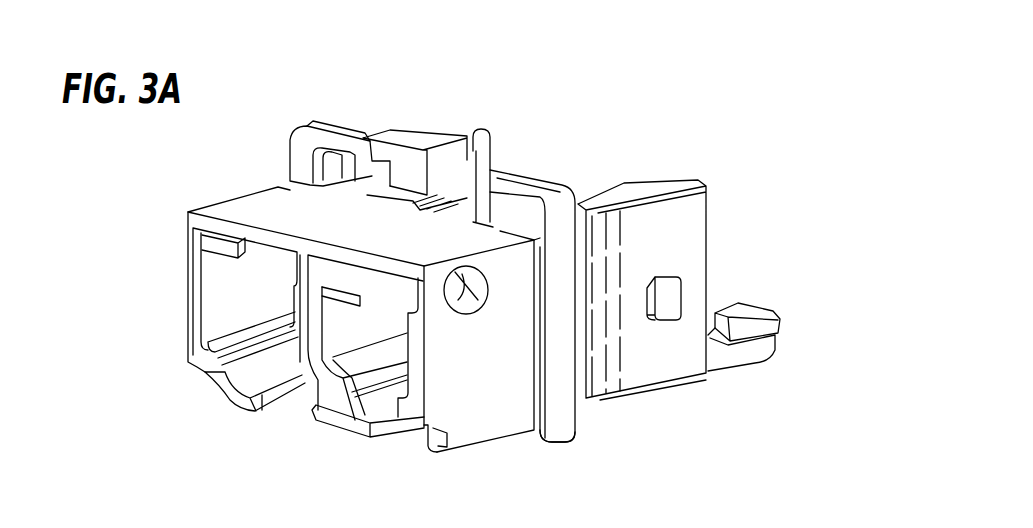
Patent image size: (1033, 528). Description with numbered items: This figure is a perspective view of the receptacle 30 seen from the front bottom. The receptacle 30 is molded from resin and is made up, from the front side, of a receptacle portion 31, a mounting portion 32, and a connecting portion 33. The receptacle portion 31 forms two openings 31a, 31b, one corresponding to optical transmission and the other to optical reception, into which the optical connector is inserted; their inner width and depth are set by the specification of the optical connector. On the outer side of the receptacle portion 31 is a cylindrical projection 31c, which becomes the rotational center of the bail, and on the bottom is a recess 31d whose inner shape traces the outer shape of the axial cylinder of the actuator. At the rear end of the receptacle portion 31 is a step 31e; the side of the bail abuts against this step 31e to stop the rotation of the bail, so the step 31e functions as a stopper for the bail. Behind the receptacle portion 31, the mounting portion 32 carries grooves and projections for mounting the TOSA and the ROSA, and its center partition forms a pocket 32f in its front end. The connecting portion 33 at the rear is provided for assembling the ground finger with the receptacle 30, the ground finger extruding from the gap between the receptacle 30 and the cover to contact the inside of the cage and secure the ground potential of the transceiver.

The receptacle 30 is at (634, 126).
The receptacle portion 31 is at (357, 316).
The opening 31a is at (243, 317).
The opening 31b is at (378, 335).
The cylindrical projection 31c is at (471, 314).
The recess 31d is at (298, 150).
The step 31e is at (555, 412).
The mounting portion 32 is at (649, 332).
The pocket 32f is at (671, 322).
The connecting portion 33 is at (748, 375).